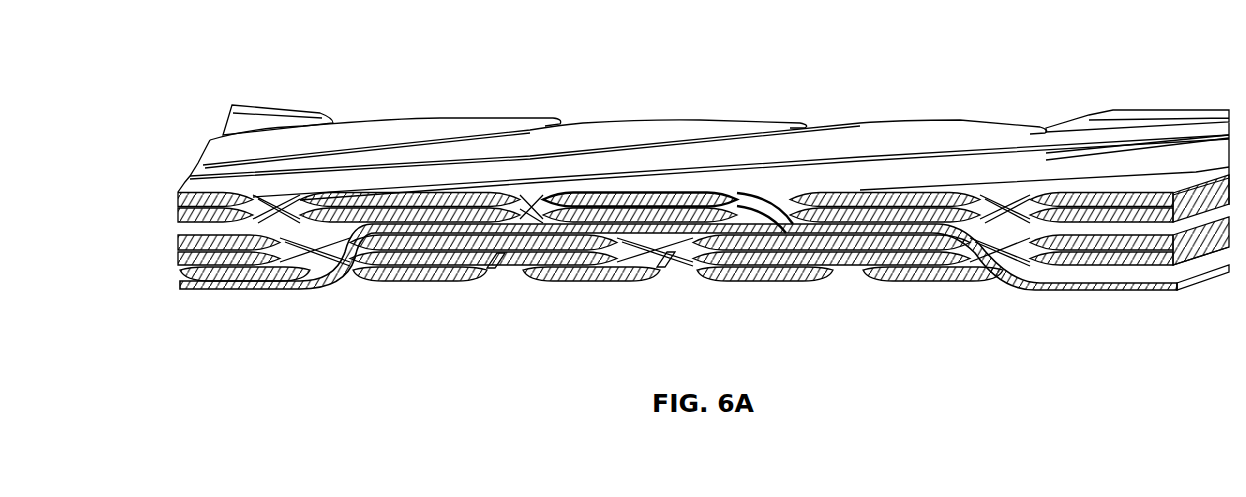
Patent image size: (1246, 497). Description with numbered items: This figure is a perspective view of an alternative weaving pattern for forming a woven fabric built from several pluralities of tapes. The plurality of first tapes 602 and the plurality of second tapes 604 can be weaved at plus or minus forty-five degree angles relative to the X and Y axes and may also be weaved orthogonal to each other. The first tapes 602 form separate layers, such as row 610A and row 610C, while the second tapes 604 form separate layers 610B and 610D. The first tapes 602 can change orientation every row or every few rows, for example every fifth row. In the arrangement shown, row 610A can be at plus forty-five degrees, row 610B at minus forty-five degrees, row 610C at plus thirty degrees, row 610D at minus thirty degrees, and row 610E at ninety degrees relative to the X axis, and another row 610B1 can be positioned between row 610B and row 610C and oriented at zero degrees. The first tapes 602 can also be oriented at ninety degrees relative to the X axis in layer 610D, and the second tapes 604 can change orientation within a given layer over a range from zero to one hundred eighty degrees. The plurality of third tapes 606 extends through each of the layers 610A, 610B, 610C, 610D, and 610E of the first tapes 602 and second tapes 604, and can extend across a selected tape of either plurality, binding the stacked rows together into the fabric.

The plurality of first tapes 602 is at (382, 133).
The plurality of second tapes 604 is at (383, 215).
The plurality of third tapes 606 is at (252, 110).
The row 610A is at (1150, 200).
The row 610B is at (1087, 223).
The row 610B1 is at (993, 223).
The row 610C is at (1157, 268).
The row 610D is at (1090, 260).
The row 610E is at (942, 272).